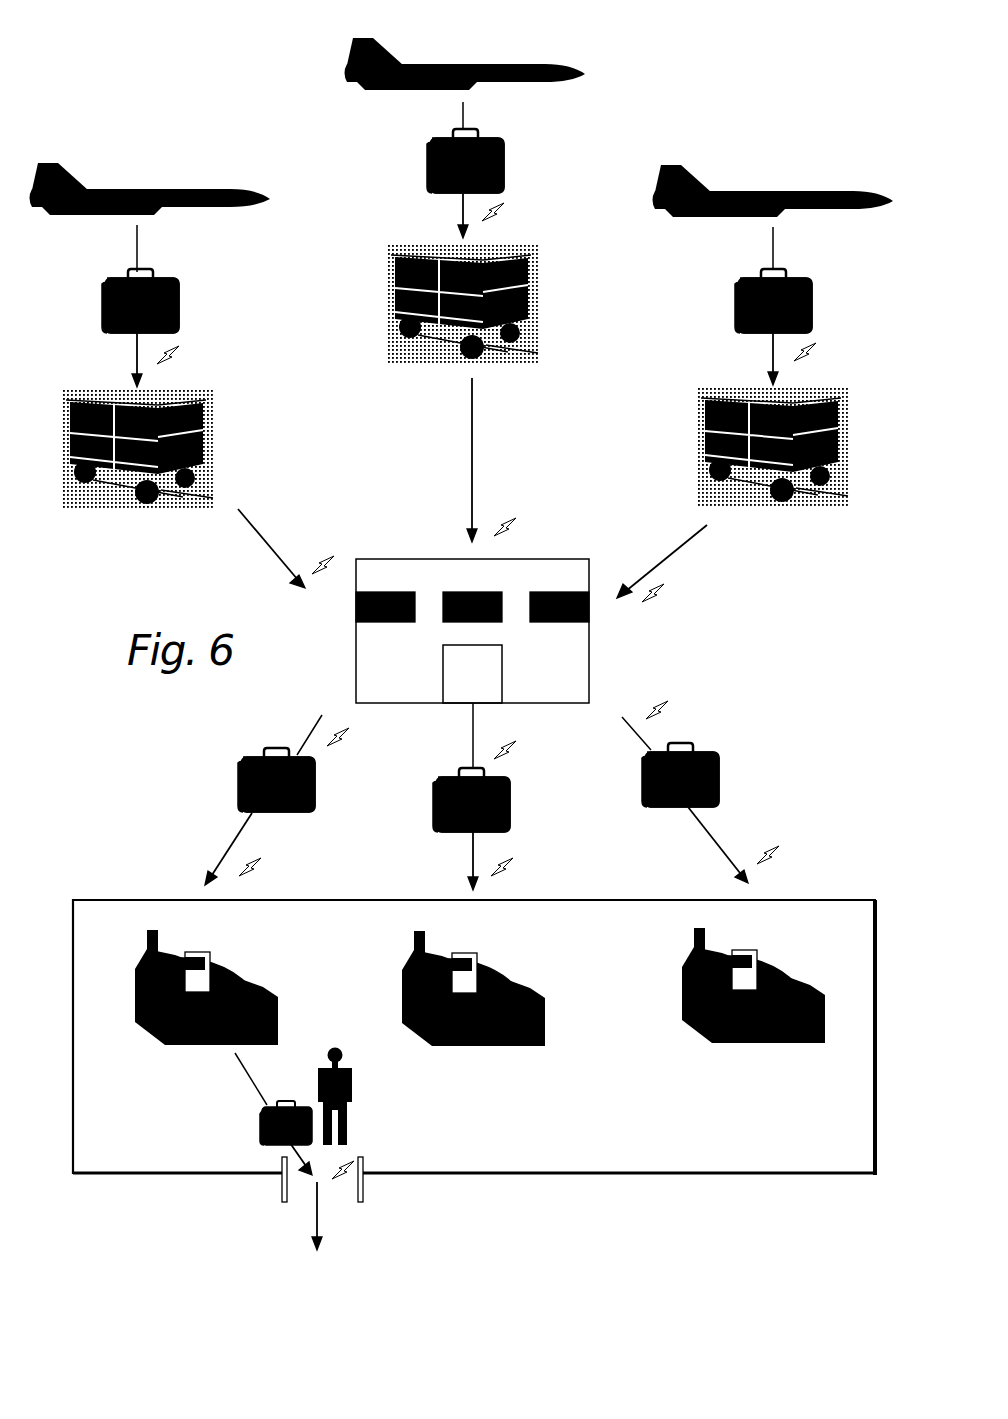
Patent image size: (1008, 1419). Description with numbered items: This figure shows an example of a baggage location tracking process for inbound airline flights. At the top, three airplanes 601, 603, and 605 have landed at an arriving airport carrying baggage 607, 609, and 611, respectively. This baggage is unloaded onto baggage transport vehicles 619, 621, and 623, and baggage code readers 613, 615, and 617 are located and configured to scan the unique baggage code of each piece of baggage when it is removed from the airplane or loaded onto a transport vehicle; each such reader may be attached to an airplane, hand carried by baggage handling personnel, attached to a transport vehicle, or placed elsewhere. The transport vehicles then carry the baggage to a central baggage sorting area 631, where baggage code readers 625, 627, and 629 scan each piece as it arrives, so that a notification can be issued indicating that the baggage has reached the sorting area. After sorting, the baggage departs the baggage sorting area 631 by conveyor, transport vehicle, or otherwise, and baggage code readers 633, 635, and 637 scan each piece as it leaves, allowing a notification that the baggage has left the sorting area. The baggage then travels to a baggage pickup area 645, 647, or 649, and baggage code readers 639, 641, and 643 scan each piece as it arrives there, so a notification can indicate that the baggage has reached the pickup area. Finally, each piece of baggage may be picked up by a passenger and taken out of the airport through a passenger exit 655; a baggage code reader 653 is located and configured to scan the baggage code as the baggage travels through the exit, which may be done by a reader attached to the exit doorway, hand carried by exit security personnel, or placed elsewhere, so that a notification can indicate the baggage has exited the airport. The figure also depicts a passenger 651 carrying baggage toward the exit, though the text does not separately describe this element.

The airplane 601 is at (173, 188).
The airplane 603 is at (492, 64).
The airplane 605 is at (800, 192).
The baggage 607 is at (165, 280).
The baggage 609 is at (502, 142).
The baggage 611 is at (742, 278).
The baggage code reader 613 is at (187, 345).
The baggage code reader 615 is at (507, 197).
The baggage code reader 617 is at (820, 345).
The baggage transport vehicle 619 is at (203, 390).
The baggage transport vehicle 621 is at (407, 245).
The baggage transport vehicle 623 is at (708, 388).
The baggage code reader 625 is at (335, 560).
The baggage code reader 627 is at (520, 518).
The baggage code reader 629 is at (670, 580).
The baggage sorting area 631 is at (563, 559).
The baggage code reader 633 is at (347, 747).
The baggage code reader 635 is at (515, 760).
The baggage code reader 637 is at (668, 703).
The baggage code reader 639 is at (265, 858).
The baggage code reader 641 is at (515, 857).
The baggage code reader 643 is at (782, 843).
The baggage pickup area 645 is at (175, 1045).
The baggage pickup area 647 is at (470, 1045).
The baggage pickup area 649 is at (722, 1043).
The passenger 651 is at (338, 1048).
The baggage code reader 653 is at (355, 1157).
The passenger exit 655 is at (337, 1202).